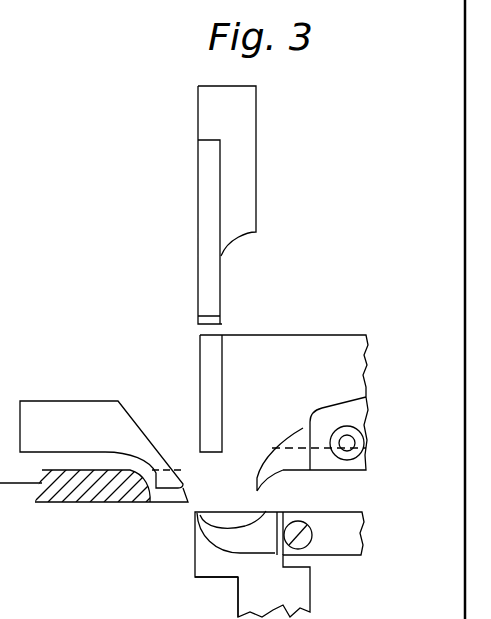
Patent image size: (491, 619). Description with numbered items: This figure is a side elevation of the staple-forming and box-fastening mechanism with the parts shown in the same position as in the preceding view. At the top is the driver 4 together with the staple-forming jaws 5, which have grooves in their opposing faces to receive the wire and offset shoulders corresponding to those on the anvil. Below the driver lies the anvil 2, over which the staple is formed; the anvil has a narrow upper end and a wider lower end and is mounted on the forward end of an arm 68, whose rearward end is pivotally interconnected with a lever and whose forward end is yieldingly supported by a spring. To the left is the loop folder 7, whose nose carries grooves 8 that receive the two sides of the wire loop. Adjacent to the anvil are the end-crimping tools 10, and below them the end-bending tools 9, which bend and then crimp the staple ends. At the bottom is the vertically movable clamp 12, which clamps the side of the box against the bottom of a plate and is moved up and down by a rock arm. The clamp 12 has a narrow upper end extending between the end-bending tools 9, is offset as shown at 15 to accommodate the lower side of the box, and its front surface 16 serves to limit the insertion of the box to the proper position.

The anvil 2 is at (210, 368).
The driver 4 is at (249, 170).
The staple-forming jaws 5 is at (205, 190).
The loop folder 7 is at (101, 444).
The grooves 8 is at (172, 496).
The end-bending tools 9 is at (325, 513).
The end-crimping tools 10 is at (300, 432).
The clamp 12 is at (300, 592).
The offset 15 is at (205, 579).
The front surface 16 is at (238, 604).
The arm 68 is at (300, 340).